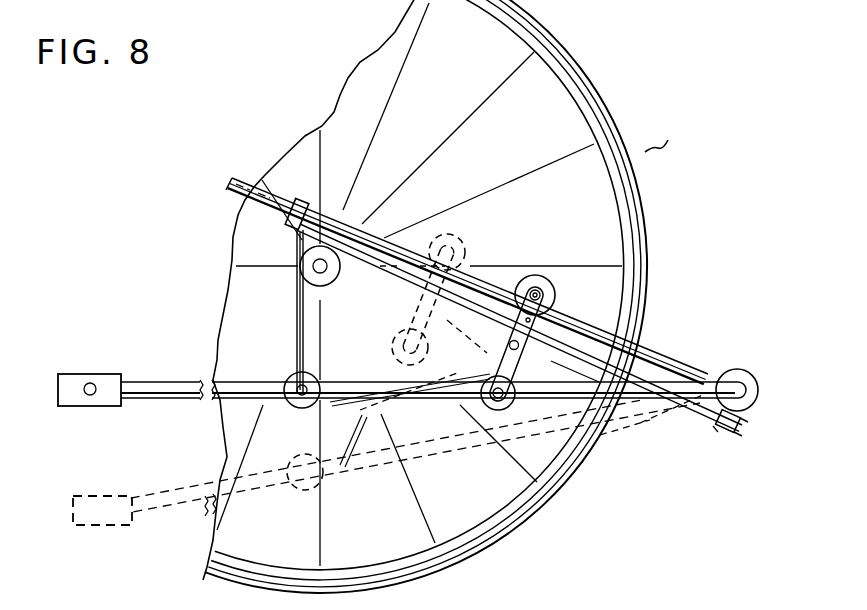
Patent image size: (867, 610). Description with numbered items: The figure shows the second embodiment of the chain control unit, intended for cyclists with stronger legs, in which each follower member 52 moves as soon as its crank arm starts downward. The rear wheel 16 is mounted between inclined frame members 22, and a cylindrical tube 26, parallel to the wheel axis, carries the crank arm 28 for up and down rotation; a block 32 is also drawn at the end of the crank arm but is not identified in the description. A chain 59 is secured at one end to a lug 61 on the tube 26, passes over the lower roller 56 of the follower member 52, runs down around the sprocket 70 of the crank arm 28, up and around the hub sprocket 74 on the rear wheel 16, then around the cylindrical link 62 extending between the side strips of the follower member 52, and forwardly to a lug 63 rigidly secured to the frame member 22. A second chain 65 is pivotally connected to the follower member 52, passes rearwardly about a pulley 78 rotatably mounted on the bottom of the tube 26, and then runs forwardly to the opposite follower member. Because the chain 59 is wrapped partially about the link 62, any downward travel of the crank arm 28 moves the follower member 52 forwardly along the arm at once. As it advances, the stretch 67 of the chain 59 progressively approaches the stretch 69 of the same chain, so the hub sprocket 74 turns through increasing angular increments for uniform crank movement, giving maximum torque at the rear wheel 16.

The rear wheel 16 is at (627, 151).
The frame member 22 is at (242, 178).
The cylindrical tube 26 is at (752, 378).
The crank arm 28 is at (172, 388).
The end block 32 is at (97, 400).
The follower member 52 is at (468, 249).
The lower roller 56 is at (505, 410).
The chain 59 is at (292, 312).
The lug 61 is at (721, 433).
The cylindrical link 62 is at (444, 306).
The lug 63 is at (306, 205).
The second chain 65 is at (612, 356).
The stretch 67 is at (442, 380).
The stretch 69 is at (294, 308).
The sprocket 70 is at (311, 381).
The hub sprocket 74 is at (300, 258).
The pulley 78 is at (735, 430).